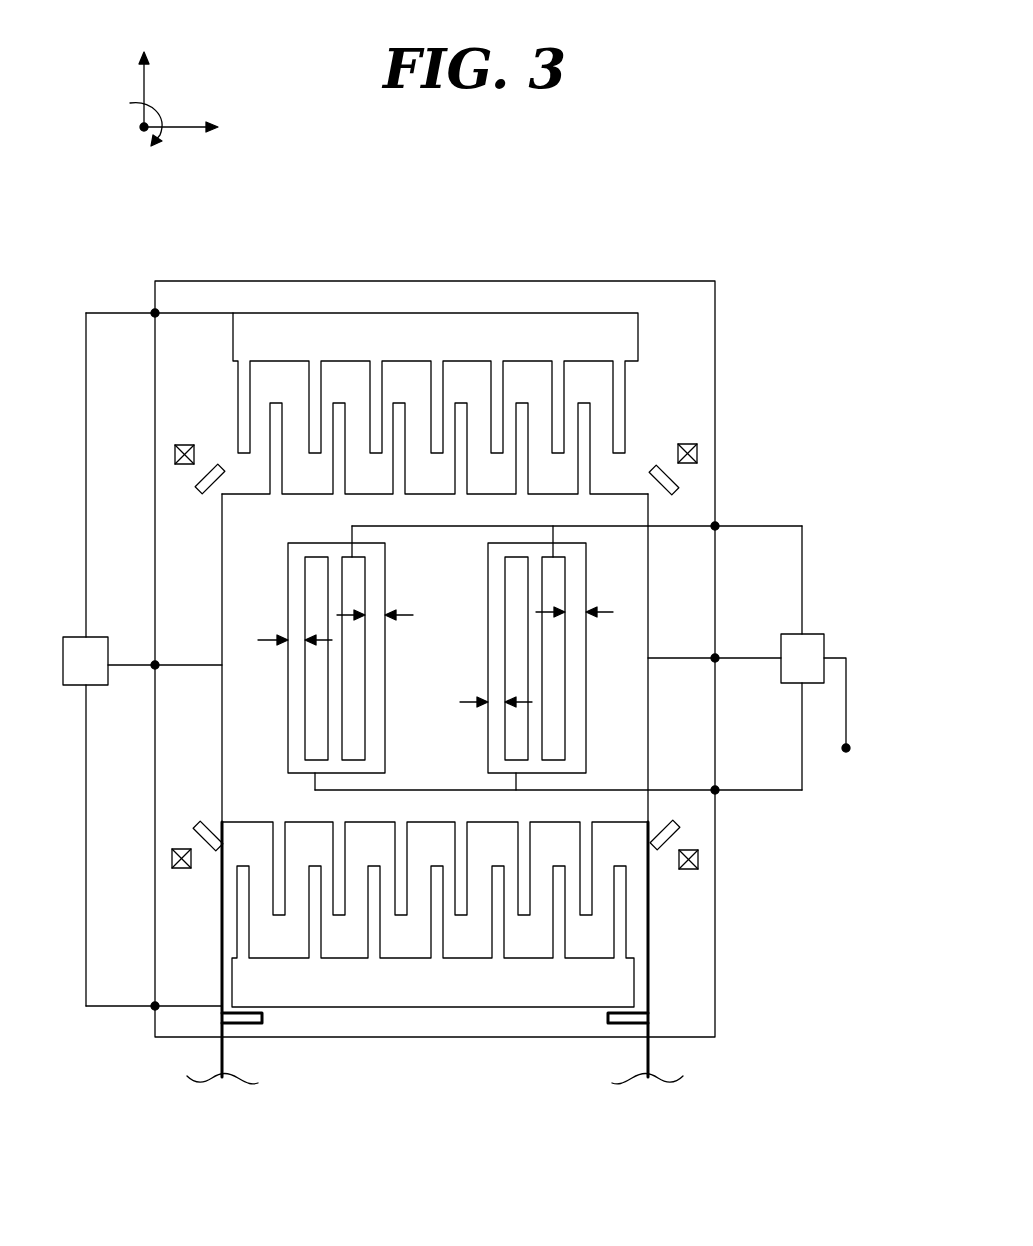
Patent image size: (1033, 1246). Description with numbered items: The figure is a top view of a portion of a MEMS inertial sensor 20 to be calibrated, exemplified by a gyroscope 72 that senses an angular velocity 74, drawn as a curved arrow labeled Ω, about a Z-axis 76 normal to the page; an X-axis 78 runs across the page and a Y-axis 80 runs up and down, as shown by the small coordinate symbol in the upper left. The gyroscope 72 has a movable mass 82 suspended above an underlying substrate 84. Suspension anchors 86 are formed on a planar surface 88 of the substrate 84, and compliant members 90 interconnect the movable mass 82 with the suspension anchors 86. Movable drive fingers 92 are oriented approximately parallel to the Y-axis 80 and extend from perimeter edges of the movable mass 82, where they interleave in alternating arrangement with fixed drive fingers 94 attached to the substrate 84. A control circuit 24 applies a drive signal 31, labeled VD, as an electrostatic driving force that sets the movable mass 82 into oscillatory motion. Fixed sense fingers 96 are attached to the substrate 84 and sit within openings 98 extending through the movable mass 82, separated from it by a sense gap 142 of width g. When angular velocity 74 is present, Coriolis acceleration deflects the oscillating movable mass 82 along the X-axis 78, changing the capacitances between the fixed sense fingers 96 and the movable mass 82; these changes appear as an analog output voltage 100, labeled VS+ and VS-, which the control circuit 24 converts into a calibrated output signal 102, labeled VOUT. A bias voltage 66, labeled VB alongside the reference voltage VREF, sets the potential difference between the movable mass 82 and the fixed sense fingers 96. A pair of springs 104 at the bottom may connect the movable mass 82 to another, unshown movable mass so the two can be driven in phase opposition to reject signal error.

The MEMS inertial sensor 20 is at (450, 1089).
The control circuit 24 is at (93, 637).
The drive signal 31 is at (93, 300).
The bias voltage 66 is at (118, 742).
The gyroscope 72 is at (659, 205).
The angular velocity 74 is at (175, 90).
The Z-axis 76 is at (146, 132).
The X-axis 78 is at (183, 128).
The Y-axis 80 is at (146, 78).
The movable mass 82 is at (240, 605).
The substrate 84 is at (167, 285).
The suspension anchors 86 is at (185, 447).
The planar surface 88 is at (408, 383).
The compliant members 90 is at (205, 485).
The movable drive fingers 92 is at (343, 472).
The fixed drive fingers 94 is at (314, 385).
The fixed sense fingers 96 is at (310, 568).
The openings 98 is at (295, 713).
The analog output voltage 100 is at (767, 512).
The calibrated output signal 102 is at (842, 780).
The springs 104 is at (220, 1052).
The sense gap 142 is at (273, 640).